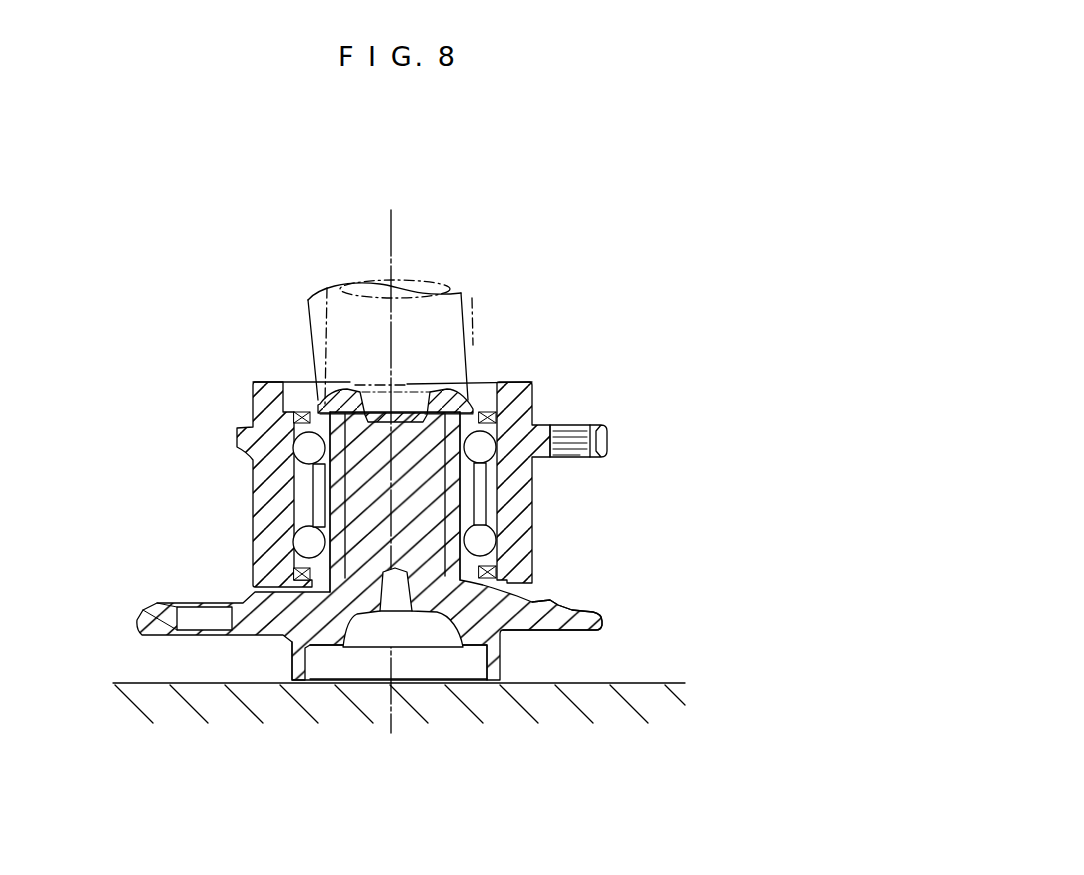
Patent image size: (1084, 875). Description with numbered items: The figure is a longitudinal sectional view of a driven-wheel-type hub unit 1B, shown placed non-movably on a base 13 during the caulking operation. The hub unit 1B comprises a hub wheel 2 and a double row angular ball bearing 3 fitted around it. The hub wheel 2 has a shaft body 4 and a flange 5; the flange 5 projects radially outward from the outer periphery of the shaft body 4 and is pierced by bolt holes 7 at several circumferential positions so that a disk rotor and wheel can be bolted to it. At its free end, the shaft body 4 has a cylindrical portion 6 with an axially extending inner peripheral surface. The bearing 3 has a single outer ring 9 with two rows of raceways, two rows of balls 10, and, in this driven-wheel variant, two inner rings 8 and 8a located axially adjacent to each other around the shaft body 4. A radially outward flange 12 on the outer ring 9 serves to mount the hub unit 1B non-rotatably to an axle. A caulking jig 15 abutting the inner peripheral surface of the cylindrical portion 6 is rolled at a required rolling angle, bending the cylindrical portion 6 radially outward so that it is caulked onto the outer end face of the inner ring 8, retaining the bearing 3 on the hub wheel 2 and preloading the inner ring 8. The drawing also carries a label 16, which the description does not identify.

The hub unit 1B is at (562, 232).
The hub wheel 2 is at (332, 652).
The double row angular ball bearing 3 is at (262, 538).
The shaft body 4 is at (437, 483).
The flange 5 is at (577, 613).
The cylindrical portion 6 is at (340, 397).
The bolt holes 7 is at (203, 622).
The inner ring 8 is at (470, 410).
The inner ring 8a is at (470, 575).
The outer ring 9 is at (520, 412).
The balls 10 is at (302, 543).
The radially outward flange 12 is at (607, 425).
The base 13 is at (620, 681).
The caulking jig 15 is at (445, 283).
The axis 16 is at (393, 243).